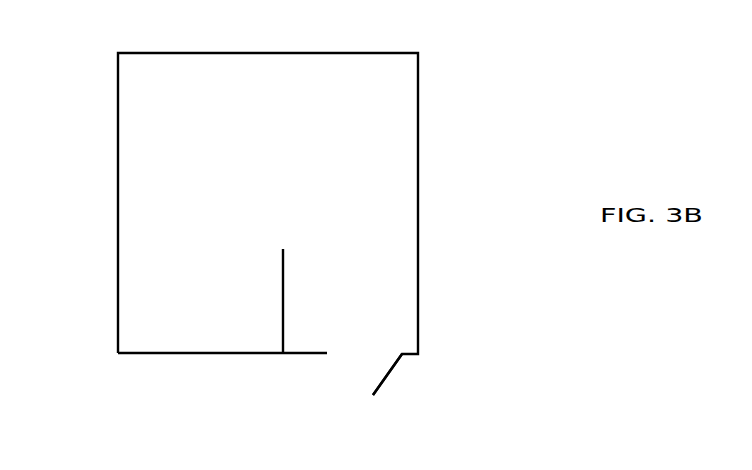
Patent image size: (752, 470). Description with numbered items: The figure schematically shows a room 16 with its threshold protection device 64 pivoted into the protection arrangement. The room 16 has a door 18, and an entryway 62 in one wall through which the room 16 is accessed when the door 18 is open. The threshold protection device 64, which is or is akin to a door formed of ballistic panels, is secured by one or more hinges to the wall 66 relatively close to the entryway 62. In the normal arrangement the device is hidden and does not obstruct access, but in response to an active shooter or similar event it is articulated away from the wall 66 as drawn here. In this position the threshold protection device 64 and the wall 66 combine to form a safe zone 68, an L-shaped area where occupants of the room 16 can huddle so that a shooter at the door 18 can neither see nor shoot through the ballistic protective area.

The room 16 is at (85, 92).
The door 18 is at (382, 380).
The entryway 62 is at (363, 357).
The threshold protection device 64 is at (296, 270).
The wall 66 is at (149, 356).
The safe zone 68 is at (200, 205).